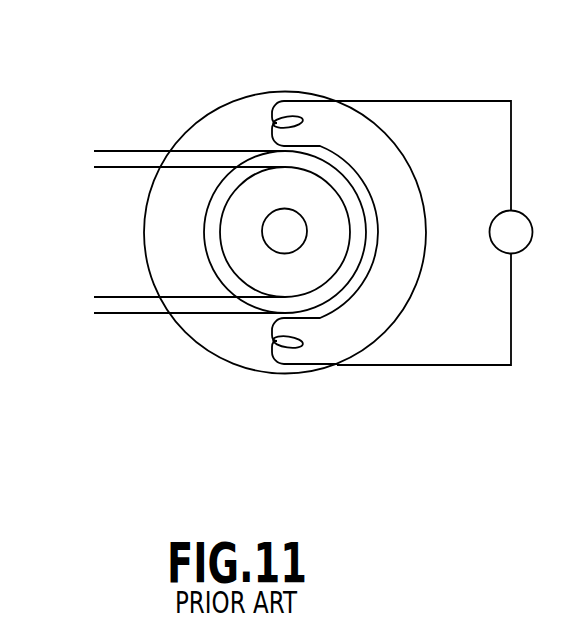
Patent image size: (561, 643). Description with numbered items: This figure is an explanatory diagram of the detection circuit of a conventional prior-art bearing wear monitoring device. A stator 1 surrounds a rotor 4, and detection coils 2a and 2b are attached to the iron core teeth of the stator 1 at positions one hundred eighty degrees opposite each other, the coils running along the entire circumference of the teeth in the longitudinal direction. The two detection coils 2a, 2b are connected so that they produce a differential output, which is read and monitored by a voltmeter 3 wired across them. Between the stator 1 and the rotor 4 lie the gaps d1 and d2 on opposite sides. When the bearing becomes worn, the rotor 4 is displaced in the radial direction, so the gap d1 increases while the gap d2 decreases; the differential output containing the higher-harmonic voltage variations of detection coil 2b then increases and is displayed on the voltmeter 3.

The stator 1 is at (275, 92).
The detection coil 2a is at (273, 119).
The detection coil 2b is at (273, 347).
The voltmeter 3 is at (435, 233).
The rotor 4 is at (220, 242).
The gap d1 is at (94, 100).
The gap d2 is at (94, 245).